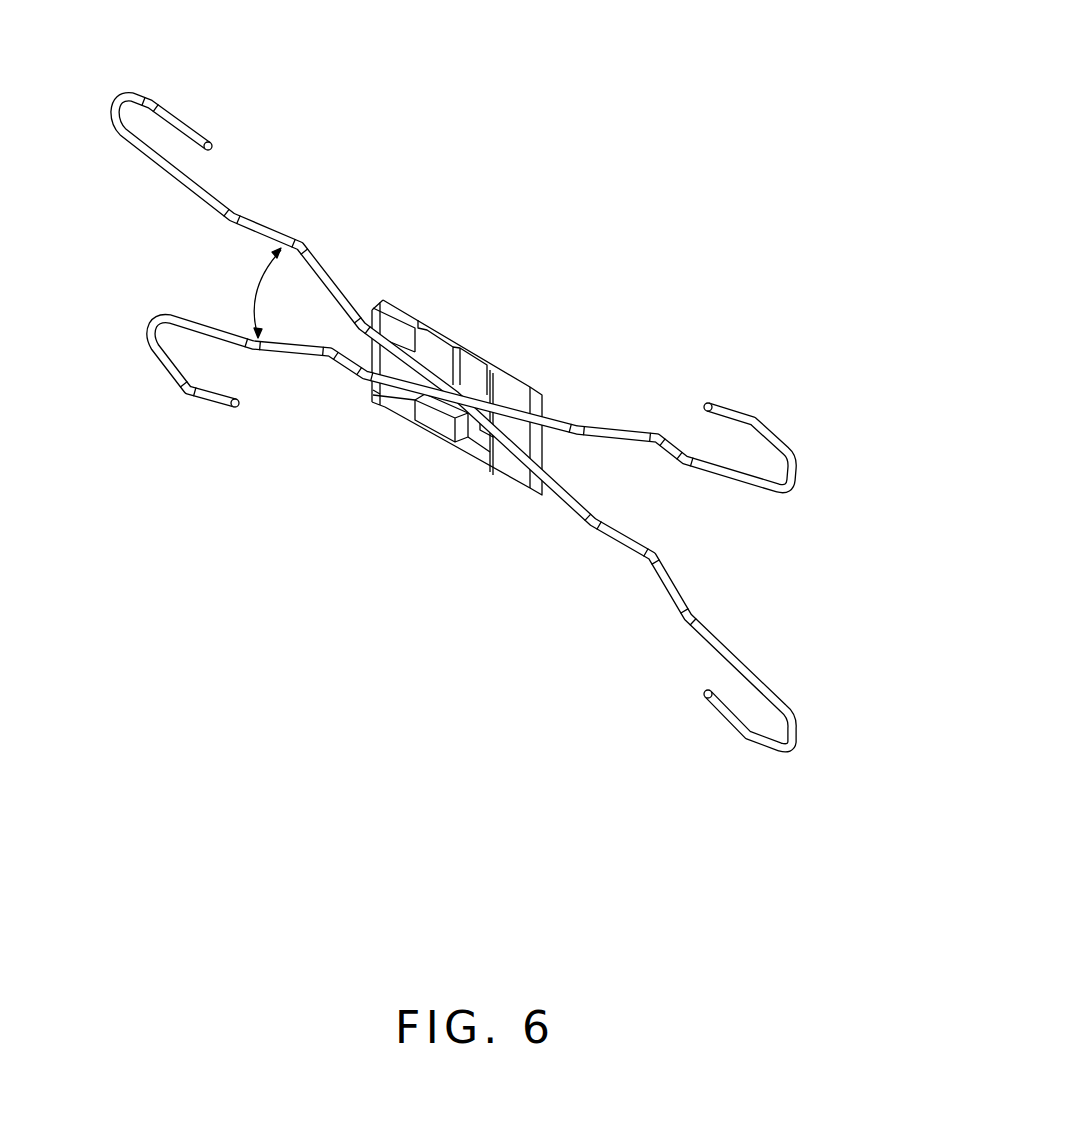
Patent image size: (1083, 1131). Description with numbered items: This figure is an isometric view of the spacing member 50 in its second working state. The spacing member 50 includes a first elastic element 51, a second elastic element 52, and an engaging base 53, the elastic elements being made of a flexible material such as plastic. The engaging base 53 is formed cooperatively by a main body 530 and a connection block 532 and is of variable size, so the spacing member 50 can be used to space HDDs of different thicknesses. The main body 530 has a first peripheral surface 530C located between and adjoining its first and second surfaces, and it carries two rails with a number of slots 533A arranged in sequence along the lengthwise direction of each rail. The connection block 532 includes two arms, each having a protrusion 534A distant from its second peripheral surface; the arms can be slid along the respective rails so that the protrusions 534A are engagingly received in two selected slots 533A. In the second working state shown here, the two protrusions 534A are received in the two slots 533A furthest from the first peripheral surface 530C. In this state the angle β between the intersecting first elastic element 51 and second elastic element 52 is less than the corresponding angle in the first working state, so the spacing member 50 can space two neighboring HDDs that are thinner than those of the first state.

The spacing member 50 is at (436, 380).
The first elastic element 51 is at (697, 495).
The second elastic element 52 is at (183, 209).
The engaging base 53 is at (422, 387).
The main body 530 is at (429, 352).
The connection block 532 is at (503, 390).
The first peripheral surface 530C is at (364, 401).
The slots 533A is at (432, 434).
The protrusion 534A is at (450, 447).